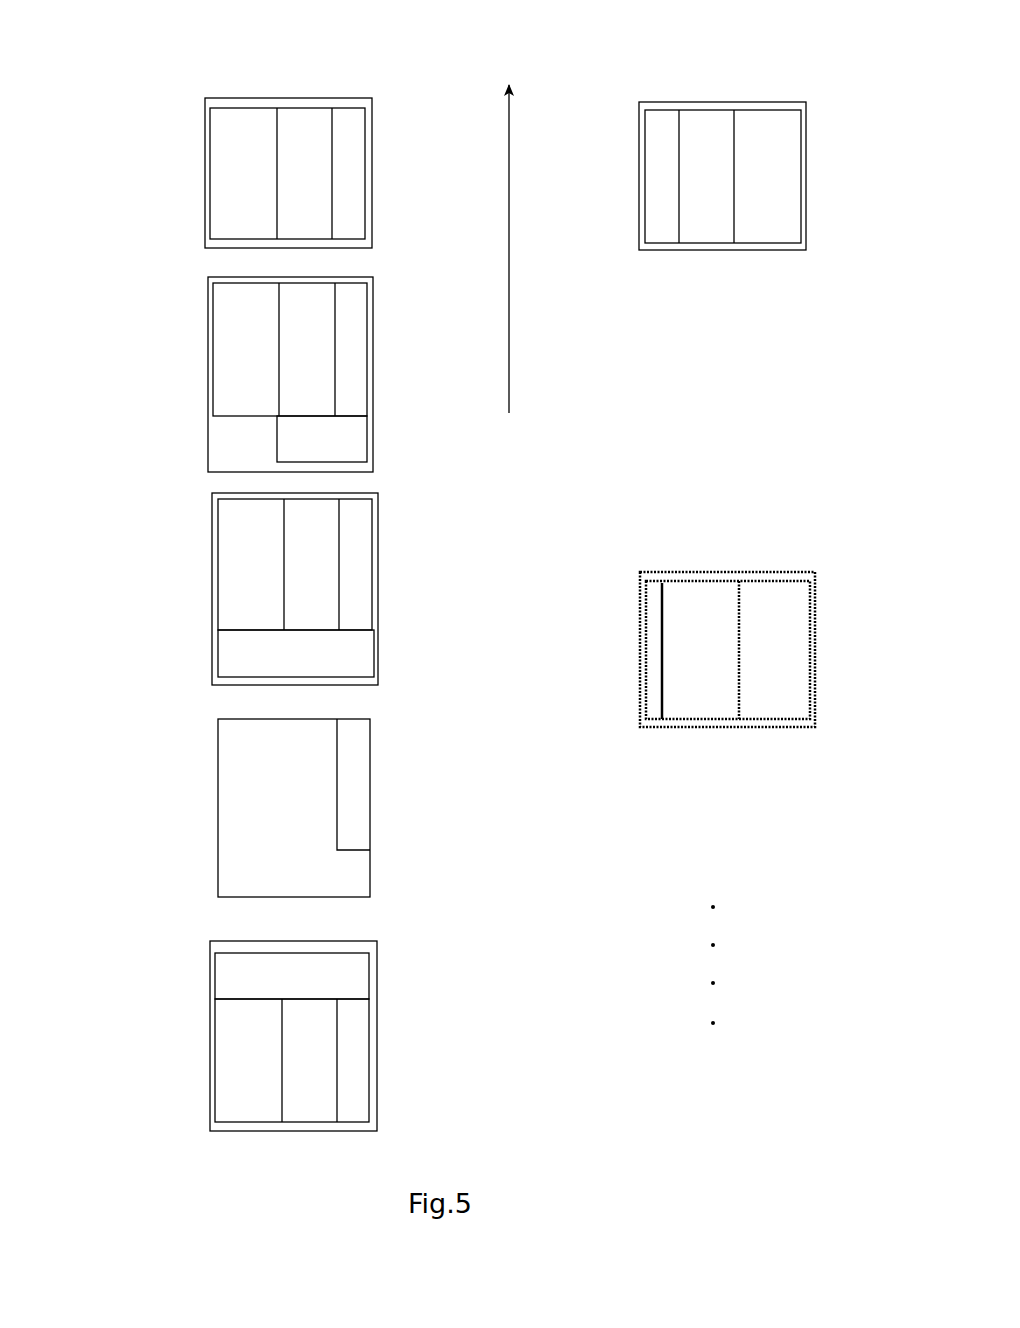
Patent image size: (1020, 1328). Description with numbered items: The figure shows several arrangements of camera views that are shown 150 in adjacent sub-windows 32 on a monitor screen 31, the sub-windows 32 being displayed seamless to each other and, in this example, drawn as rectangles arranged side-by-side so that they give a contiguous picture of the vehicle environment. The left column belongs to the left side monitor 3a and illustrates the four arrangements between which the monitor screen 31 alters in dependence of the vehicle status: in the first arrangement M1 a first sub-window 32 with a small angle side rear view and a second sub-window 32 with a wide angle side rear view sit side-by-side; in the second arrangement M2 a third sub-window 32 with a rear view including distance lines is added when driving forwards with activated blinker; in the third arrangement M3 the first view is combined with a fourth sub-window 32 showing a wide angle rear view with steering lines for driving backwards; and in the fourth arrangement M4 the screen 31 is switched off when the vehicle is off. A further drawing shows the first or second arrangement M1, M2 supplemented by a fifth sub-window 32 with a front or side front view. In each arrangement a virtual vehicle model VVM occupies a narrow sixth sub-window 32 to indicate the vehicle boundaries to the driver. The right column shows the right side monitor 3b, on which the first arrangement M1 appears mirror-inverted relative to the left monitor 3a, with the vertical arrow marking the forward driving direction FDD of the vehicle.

The step of showing camera views in adjacent sub-windows 150 is at (187, 218).
The monitor screen 31 is at (554, 614).
The sub-window 32 is at (510, 579).
The left side monitor 3a is at (152, 93).
The right side monitor 3b is at (810, 550).
The virtual vehicle model VVM is at (505, 615).
The first arrangement M1 is at (367, 605).
The second arrangement M2 is at (192, 358).
The third arrangement M3 is at (193, 572).
The fourth arrangement M4 is at (215, 783).
The forward driving direction FDD is at (513, 231).